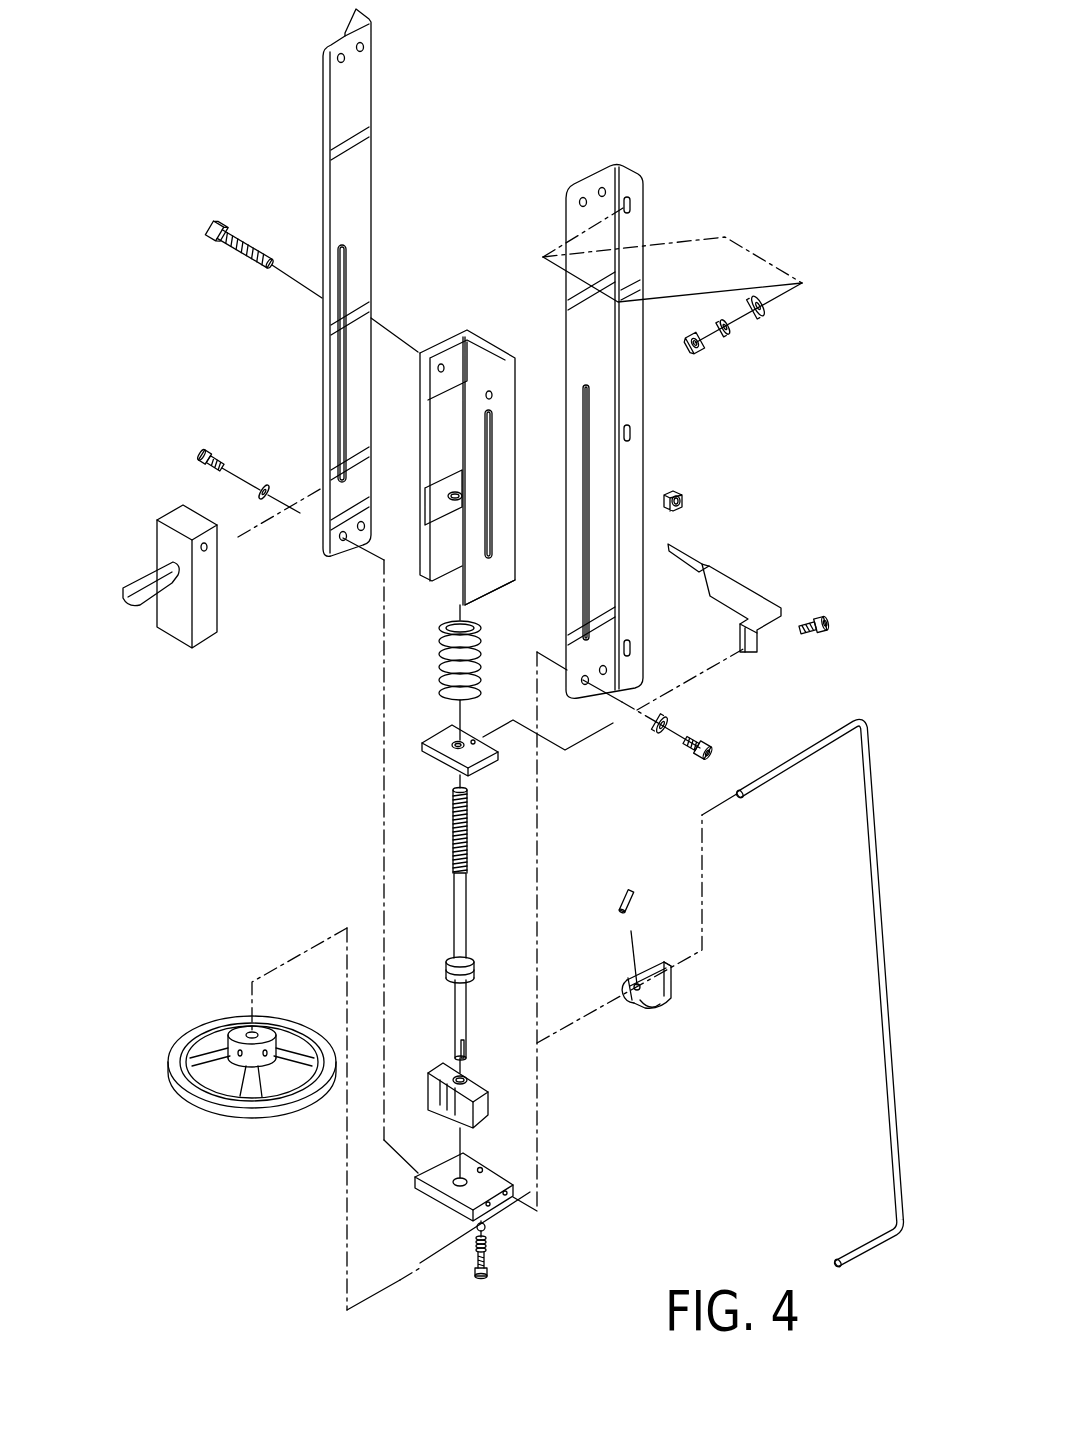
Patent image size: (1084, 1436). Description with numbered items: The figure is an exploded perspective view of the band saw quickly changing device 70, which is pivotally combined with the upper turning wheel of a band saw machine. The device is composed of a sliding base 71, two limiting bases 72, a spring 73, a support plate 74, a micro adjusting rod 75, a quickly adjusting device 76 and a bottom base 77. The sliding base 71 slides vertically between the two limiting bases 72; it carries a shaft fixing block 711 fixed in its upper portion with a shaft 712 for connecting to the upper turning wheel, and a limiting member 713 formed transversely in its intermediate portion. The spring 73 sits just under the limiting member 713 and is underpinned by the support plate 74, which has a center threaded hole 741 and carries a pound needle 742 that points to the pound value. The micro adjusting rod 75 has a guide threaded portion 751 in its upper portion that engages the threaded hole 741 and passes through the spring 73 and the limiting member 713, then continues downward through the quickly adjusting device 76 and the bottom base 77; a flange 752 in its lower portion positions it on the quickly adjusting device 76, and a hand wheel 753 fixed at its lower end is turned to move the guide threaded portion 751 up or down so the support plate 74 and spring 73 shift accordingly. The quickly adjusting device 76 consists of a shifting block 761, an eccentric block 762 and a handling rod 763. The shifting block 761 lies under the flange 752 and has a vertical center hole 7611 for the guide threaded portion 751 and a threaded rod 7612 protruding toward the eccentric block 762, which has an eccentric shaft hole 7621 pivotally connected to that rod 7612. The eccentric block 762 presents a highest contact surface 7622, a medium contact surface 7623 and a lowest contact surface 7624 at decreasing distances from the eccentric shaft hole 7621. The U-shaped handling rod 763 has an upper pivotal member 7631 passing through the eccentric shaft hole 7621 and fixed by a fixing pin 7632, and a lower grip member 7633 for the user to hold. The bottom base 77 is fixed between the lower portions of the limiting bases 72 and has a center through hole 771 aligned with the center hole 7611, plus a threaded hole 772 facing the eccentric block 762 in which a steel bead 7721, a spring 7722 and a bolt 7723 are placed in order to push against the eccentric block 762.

The band saw quickly changing device 70 is at (250, 790).
The sliding base 71 is at (397, 415).
The shaft fixing block 711 is at (170, 625).
The shaft 712 is at (147, 583).
The limiting member 713 is at (440, 497).
The limiting bases 72 is at (322, 125).
The spring 73 is at (440, 680).
The support plate 74 is at (399, 732).
The threaded hole 741 is at (458, 742).
The pound needle 742 is at (748, 568).
The micro adjusting rod 75 is at (377, 924).
The guide threaded portion 751 is at (455, 820).
The flange 752 is at (446, 966).
The hand wheel 753 is at (195, 1116).
The quickly adjusting device 76 is at (460, 1101).
The shifting block 761 is at (487, 1115).
The center hole 7611 is at (464, 1076).
The threaded rod 7612 is at (478, 1082).
The eccentric block 762 is at (687, 963).
The eccentric shaft hole 7621 is at (642, 990).
The highest contact surface 7622 is at (658, 1008).
The medium contact surface 7623 is at (665, 965).
The lowest contact surface 7624 is at (633, 982).
The handling rod 763 is at (834, 995).
The pivotal member 7631 is at (762, 786).
The fixing pin 7632 is at (628, 912).
The grip member 7633 is at (857, 1252).
The bottom base 77 is at (459, 1236).
The center through hole 771 is at (452, 1188).
The threaded hole 772 is at (484, 1171).
The steel bead 7721 is at (488, 1228).
The spring 7722 is at (486, 1243).
The bolt 7723 is at (475, 1270).